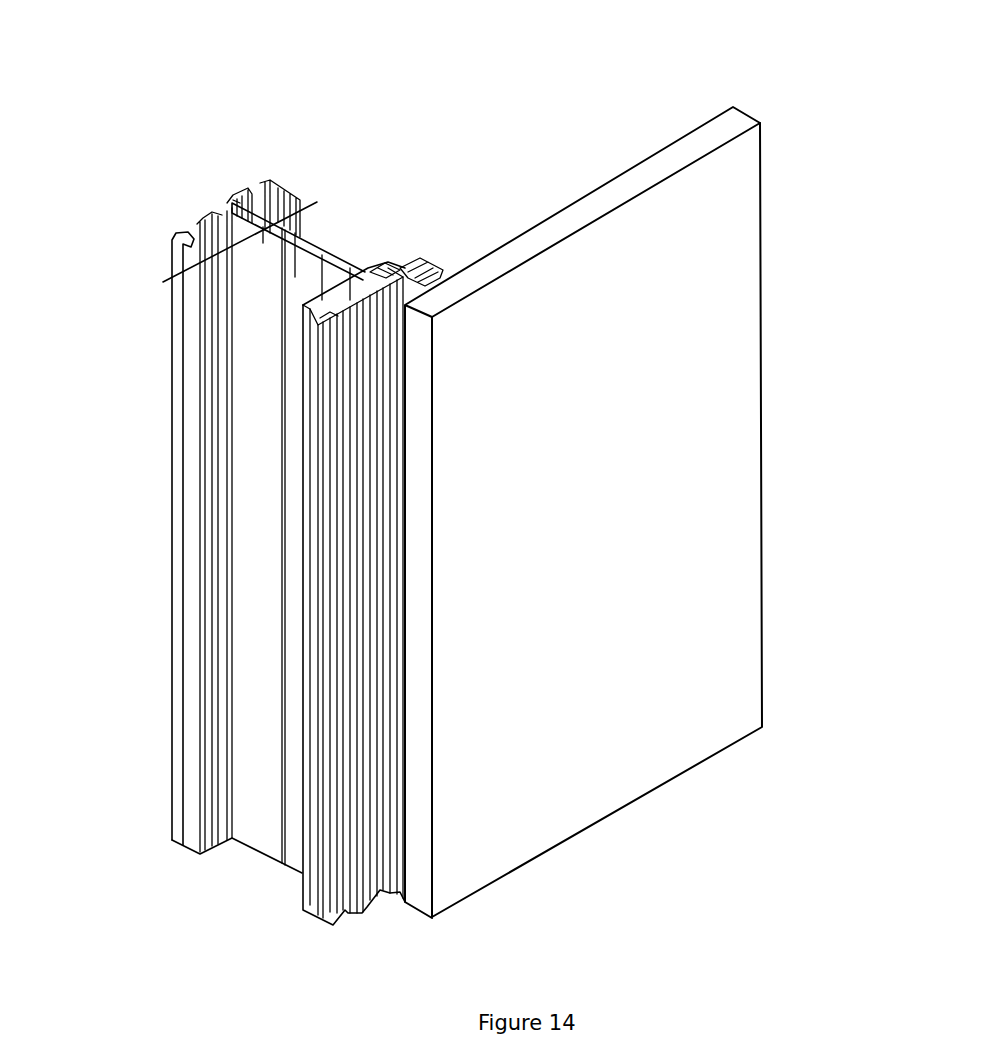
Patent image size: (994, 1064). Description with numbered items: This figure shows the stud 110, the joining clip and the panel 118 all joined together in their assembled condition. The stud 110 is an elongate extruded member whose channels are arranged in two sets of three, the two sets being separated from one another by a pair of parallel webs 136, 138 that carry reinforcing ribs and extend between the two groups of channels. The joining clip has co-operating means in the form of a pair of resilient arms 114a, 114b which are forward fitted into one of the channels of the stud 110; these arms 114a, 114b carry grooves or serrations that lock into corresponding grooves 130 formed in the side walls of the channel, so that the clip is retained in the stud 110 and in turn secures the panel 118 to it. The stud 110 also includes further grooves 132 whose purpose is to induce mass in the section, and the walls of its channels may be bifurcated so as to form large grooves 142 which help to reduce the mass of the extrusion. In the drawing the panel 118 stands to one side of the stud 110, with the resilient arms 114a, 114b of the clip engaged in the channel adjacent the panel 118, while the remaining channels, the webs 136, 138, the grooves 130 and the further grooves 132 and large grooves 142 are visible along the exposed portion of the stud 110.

The stud 110 is at (324, 152).
The resilient arm 114a is at (388, 262).
The resilient arm 114b is at (412, 265).
The panel 118 is at (598, 793).
The grooves 130 is at (197, 228).
The further grooves 132 is at (207, 598).
The web 136 is at (247, 327).
The web 138 is at (163, 282).
The large grooves 142 is at (238, 195).